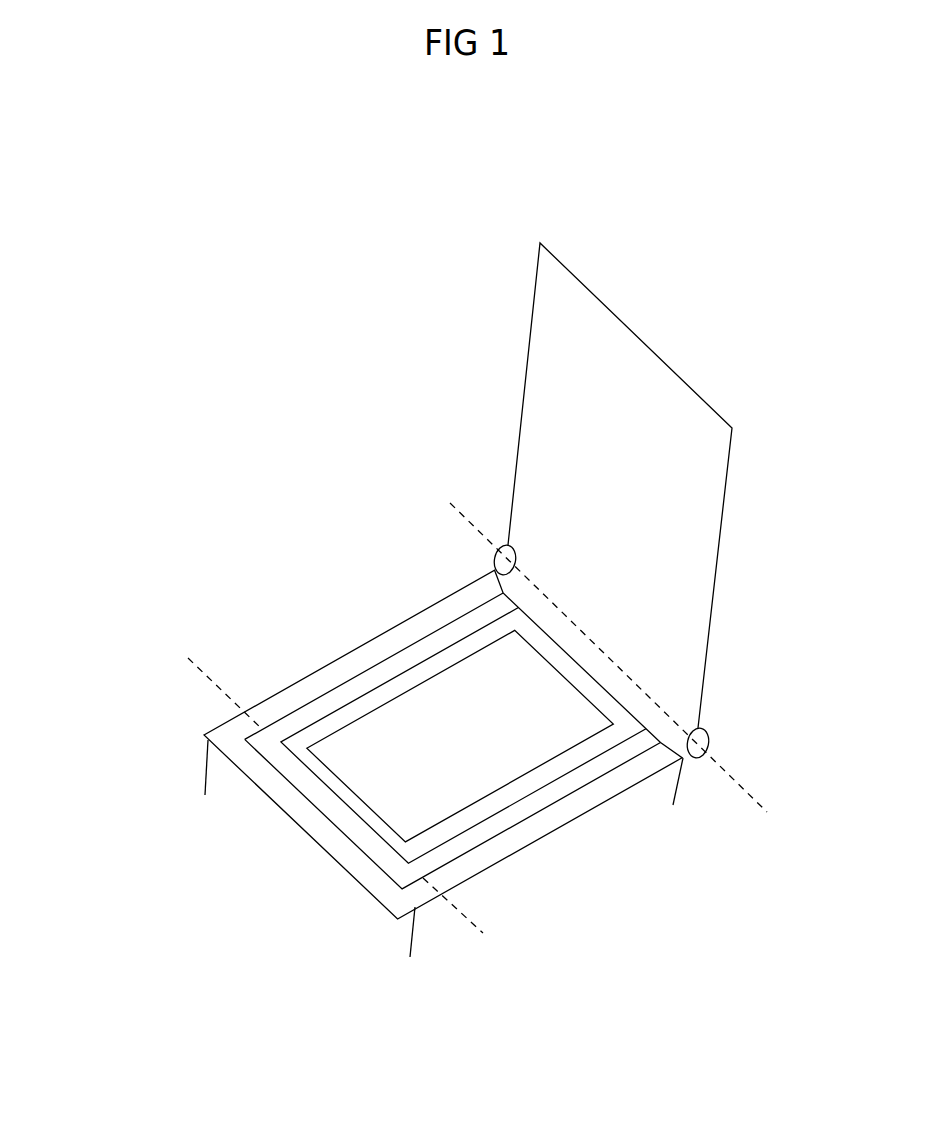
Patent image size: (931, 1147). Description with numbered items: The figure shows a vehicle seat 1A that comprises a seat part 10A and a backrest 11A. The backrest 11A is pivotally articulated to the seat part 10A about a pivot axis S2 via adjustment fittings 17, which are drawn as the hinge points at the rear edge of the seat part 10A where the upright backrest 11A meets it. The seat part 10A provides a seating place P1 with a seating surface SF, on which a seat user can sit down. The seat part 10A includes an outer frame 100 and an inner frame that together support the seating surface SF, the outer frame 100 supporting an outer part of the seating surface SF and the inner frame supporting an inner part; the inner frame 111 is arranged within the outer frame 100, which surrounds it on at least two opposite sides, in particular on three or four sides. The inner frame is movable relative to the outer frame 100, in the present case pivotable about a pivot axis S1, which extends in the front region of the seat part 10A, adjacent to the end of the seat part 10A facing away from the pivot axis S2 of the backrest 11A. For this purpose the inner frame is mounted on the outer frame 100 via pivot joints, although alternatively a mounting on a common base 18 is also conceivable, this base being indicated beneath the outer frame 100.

The vehicle seat 1A is at (280, 427).
The seat part 10A is at (347, 617).
The backrest 11A is at (495, 425).
The seating place P1 is at (652, 312).
The adjustment fittings 17 is at (514, 549).
The common base 18 is at (197, 767).
The outer frame 100 is at (353, 877).
The inner frame portion 111 is at (553, 767).
The seating surface SF is at (514, 694).
The pivot axis S1 is at (477, 927).
The pivot axis S2 is at (740, 787).